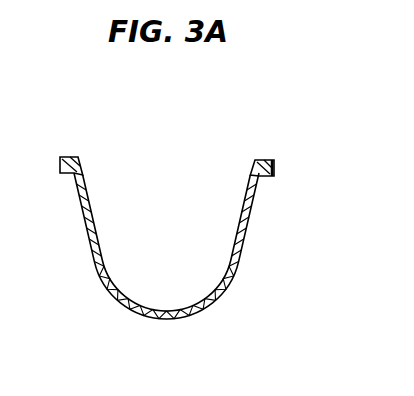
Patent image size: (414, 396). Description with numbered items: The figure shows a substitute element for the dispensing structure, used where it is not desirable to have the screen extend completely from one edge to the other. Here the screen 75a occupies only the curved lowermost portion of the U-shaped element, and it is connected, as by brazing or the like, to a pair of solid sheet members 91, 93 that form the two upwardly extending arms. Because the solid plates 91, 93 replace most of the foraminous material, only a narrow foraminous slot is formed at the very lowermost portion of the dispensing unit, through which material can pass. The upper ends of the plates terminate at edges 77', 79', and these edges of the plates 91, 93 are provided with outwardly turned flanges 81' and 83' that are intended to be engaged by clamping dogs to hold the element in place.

The screen 75a is at (133, 312).
The edge 77' is at (112, 215).
The edge 79' is at (225, 203).
The flange 81' is at (55, 188).
The flange 83' is at (284, 173).
The solid sheet member 91 is at (93, 258).
The solid sheet member 93 is at (248, 241).